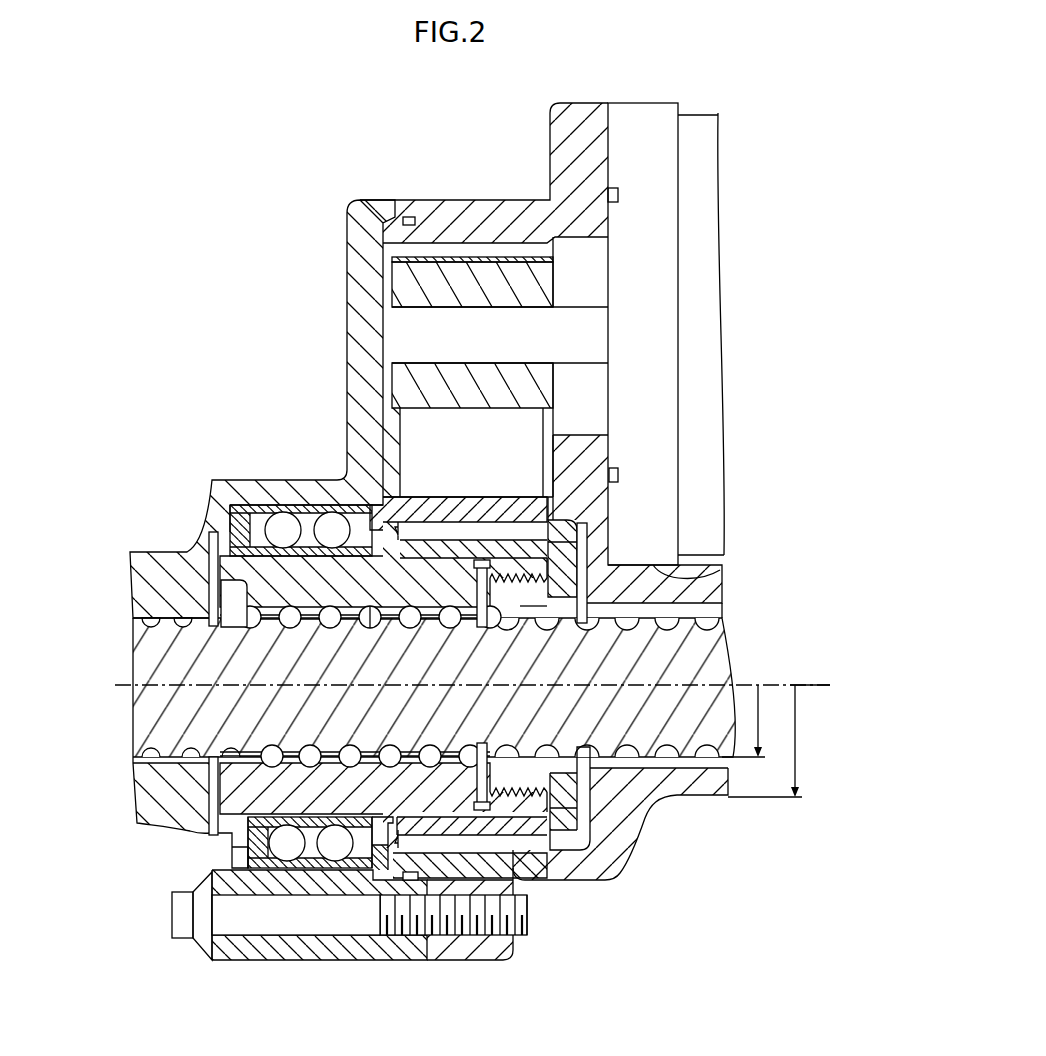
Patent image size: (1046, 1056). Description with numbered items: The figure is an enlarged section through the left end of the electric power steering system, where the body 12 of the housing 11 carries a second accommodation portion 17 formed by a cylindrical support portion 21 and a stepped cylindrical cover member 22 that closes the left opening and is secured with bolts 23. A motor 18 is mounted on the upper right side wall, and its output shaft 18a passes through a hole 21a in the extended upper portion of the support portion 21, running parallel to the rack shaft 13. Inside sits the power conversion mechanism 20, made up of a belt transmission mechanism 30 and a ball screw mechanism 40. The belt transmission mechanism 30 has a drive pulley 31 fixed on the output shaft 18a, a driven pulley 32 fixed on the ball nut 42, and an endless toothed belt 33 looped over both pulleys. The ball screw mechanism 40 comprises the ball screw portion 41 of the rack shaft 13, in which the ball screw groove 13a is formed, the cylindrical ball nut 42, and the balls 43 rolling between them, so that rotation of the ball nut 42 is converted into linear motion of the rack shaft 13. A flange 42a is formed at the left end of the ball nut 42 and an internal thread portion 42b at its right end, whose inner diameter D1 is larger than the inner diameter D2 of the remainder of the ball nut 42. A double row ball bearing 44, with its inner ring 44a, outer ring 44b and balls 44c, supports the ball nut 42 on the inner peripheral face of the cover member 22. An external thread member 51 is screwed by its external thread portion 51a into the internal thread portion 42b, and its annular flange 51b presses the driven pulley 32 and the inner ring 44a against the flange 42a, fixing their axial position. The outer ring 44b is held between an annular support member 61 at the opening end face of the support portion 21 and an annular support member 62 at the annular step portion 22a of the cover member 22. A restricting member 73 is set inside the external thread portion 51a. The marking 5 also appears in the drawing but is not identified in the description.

The fastening portion 5 is at (553, 505).
The housing 11 is at (705, 580).
The body 12 is at (694, 797).
The rack shaft 13 is at (727, 666).
The ball screw groove 13a is at (620, 628).
The second accommodation portion 17 is at (463, 165).
The motor 18 is at (692, 116).
The output shaft 18a is at (583, 307).
The power conversion mechanism 20 is at (210, 412).
The support portion 21 is at (463, 200).
The hole 21a is at (597, 435).
The cover member 22 is at (391, 200).
The annular step portion 22a is at (232, 845).
The bolts 23 is at (172, 915).
The belt transmission mechanism 30 is at (386, 437).
The drive pulley 31 is at (398, 283).
The driven pulley 32 is at (437, 556).
The belt 33 is at (394, 260).
The ball screw mechanism 40 is at (240, 600).
The ball screw portion 41 is at (724, 612).
The ball nut 42 is at (297, 628).
The flange 42a is at (228, 548).
The internal thread portion 42b is at (530, 622).
The balls 43 is at (372, 628).
The double row ball bearing 44 is at (232, 1005).
The inner ring 44a is at (336, 862).
The outer ring 44b is at (263, 868).
The balls 44c is at (288, 862).
The external thread member 51 is at (582, 565).
The external thread portion 51a is at (522, 576).
The flange 51b is at (586, 535).
The support member 61 is at (432, 882).
The support member 62 is at (237, 868).
The restricting member 73 is at (481, 598).
The inner diameter of the internal thread portion D1 is at (779, 741).
The inner diameter of the other portion of the ball nut D2 is at (754, 721).